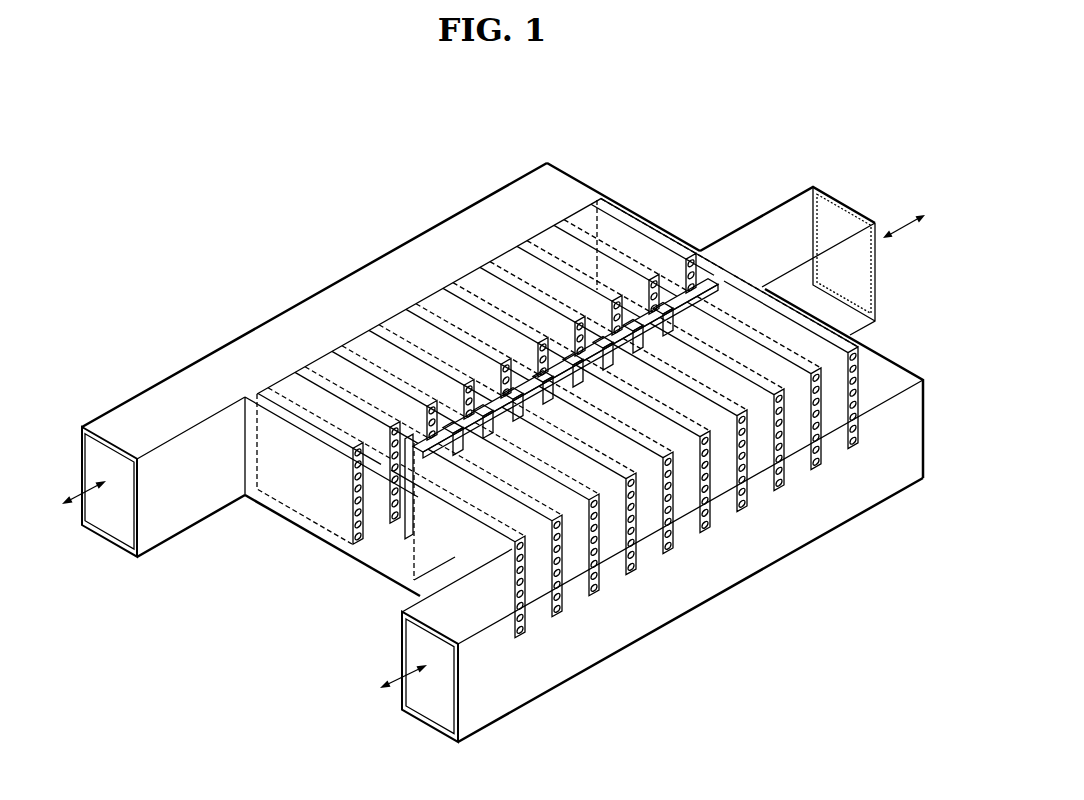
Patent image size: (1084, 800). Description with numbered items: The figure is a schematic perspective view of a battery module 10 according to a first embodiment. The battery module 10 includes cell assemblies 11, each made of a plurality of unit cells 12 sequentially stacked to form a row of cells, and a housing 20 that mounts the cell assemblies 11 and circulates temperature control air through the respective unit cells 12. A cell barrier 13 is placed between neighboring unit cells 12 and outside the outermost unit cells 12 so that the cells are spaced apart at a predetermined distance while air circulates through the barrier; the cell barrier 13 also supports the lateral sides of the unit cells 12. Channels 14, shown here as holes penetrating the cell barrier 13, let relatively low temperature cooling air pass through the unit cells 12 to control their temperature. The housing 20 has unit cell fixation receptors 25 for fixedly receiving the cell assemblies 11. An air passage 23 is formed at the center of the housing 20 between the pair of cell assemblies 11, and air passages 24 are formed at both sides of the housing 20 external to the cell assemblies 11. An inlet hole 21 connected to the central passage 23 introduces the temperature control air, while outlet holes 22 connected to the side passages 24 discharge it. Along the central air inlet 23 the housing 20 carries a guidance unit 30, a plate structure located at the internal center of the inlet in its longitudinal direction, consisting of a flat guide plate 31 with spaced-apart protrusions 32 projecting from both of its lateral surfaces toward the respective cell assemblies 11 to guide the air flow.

The battery module 10 is at (735, 162).
The cell assembly 11 is at (557, 428).
The unit cell 12 is at (706, 505).
The cell barrier 13 is at (668, 500).
The channel 14 is at (670, 542).
The housing 20 is at (481, 245).
The inlet hole 21 is at (878, 277).
The outlet hole 22 is at (115, 537).
The air passage 23 is at (390, 542).
The air passage 24 is at (333, 291).
The unit cell fixation receptor 25 is at (312, 512).
The guidance unit 30 is at (556, 345).
The guide plate 31 is at (457, 413).
The protrusion 32 is at (528, 370).